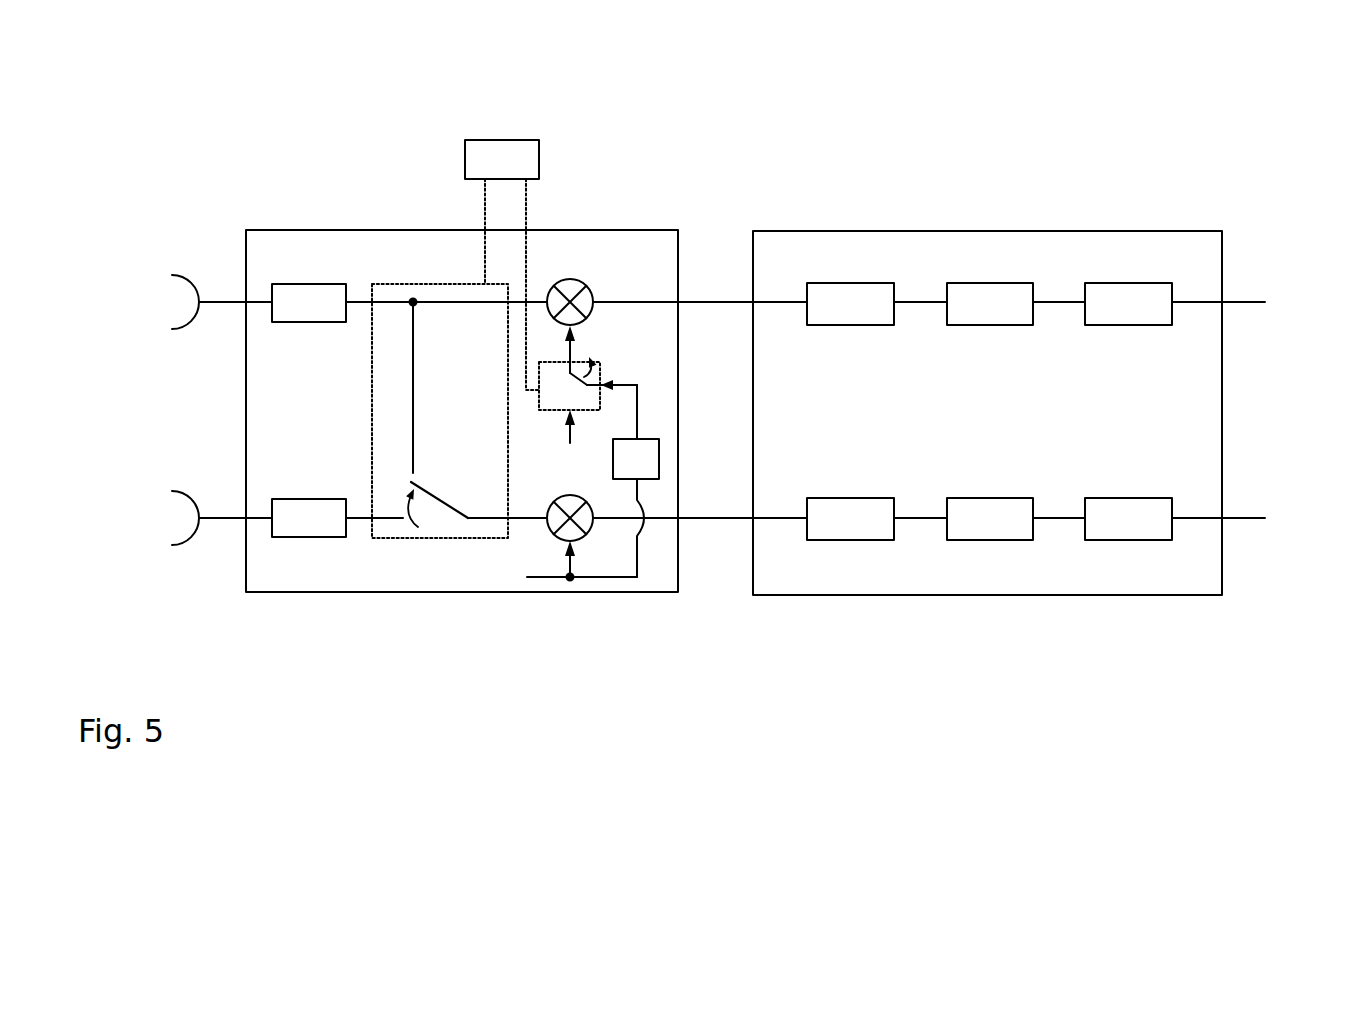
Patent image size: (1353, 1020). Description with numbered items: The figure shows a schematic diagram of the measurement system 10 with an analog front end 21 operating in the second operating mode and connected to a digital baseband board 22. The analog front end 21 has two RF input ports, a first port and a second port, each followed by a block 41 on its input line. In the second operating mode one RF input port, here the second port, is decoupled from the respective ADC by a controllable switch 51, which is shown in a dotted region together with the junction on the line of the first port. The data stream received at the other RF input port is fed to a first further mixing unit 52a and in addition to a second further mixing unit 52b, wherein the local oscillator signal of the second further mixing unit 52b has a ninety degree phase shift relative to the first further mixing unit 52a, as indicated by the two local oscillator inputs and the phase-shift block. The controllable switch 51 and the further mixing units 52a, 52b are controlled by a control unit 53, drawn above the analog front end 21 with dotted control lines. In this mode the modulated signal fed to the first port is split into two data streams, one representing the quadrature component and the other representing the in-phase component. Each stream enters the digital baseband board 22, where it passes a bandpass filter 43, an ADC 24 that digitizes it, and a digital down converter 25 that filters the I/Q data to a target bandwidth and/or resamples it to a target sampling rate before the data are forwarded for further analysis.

The measurement system 10 is at (1252, 159).
The analog front end 21 is at (627, 230).
The digital baseband board 22 is at (1103, 231).
The RF filter 41 is at (306, 284).
The bandpass filter 43 is at (838, 313).
The ADC 24 is at (978, 313).
The digital down converter 25 is at (1116, 313).
The controllable switch 51 is at (441, 497).
The first further mixing unit 52a is at (590, 290).
The second further mixing unit 52b is at (563, 496).
The control unit 53 is at (465, 160).